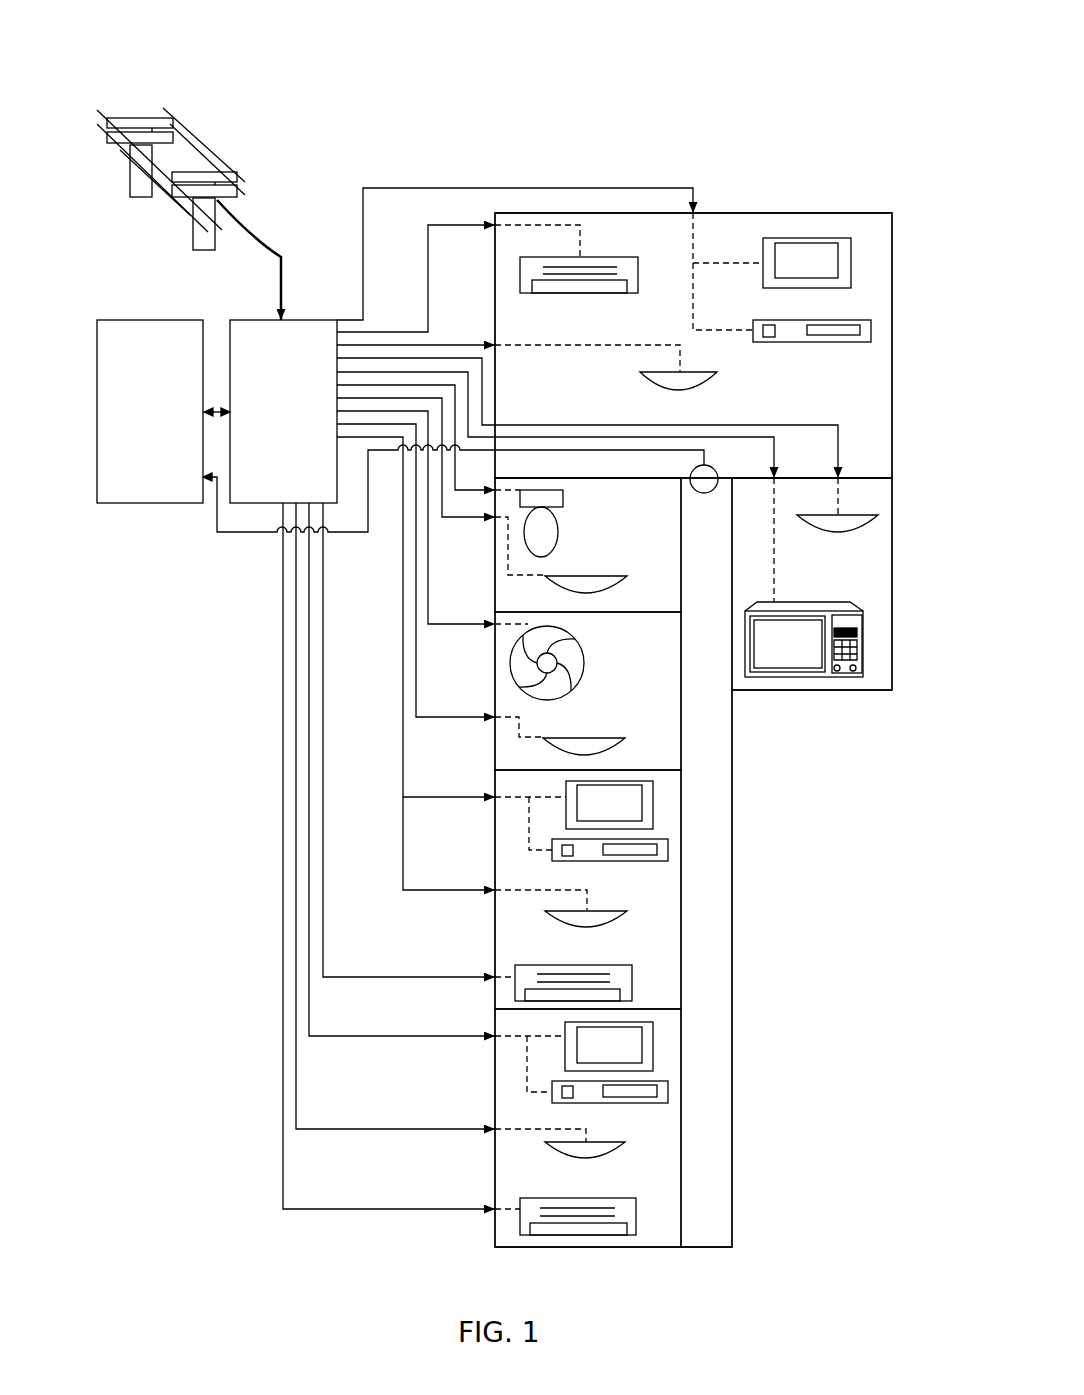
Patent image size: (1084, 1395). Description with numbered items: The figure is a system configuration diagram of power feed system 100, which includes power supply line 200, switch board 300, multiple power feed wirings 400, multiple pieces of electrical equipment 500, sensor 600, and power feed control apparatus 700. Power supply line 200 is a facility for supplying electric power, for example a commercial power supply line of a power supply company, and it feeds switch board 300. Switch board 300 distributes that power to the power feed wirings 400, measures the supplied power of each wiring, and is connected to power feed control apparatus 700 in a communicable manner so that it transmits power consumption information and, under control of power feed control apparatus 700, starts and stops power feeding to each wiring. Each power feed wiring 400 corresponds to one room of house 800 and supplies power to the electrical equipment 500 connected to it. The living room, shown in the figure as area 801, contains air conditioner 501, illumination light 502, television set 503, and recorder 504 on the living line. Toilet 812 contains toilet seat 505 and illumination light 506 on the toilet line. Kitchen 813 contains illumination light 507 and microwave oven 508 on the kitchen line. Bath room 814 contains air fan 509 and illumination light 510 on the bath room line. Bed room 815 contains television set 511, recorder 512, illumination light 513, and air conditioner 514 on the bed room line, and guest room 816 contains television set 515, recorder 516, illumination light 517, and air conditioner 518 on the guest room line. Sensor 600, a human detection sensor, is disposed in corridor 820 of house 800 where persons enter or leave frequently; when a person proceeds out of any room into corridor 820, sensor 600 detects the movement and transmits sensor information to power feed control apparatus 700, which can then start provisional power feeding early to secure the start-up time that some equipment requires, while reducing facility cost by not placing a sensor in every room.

The power feed system 100 is at (703, 62).
The power supply line 200 is at (238, 175).
The switch board 300 is at (262, 320).
The power feed wiring 400 is at (402, 186).
The electrical equipment 500 is at (597, 257).
The air conditioner 501 is at (578, 294).
The illumination light 502 is at (638, 376).
The television set 503 is at (762, 275).
The recorder 504 is at (812, 343).
The toilet seat 505 is at (559, 528).
The illumination light 506 is at (591, 576).
The illumination light 507 is at (870, 533).
The microwave oven 508 is at (784, 601).
The air fan 509 is at (585, 658).
The illumination light 510 is at (600, 738).
The television set 511 is at (655, 810).
The recorder 512 is at (668, 850).
The illumination light 513 is at (600, 910).
The air conditioner 514 is at (597, 965).
The television set 515 is at (655, 1048).
The recorder 516 is at (668, 1090).
The illumination light 517 is at (610, 1142).
The air conditioner 518 is at (607, 1198).
The sensor 600 is at (718, 473).
The power feed control apparatus 700 is at (150, 320).
The house 800 is at (840, 213).
The living room 801 is at (738, 222).
The toilet 812 is at (510, 587).
The kitchen 813 is at (798, 690).
The bath room 814 is at (508, 700).
The bed room 815 is at (508, 945).
The guest room 816 is at (515, 1173).
The corridor 820 is at (712, 942).